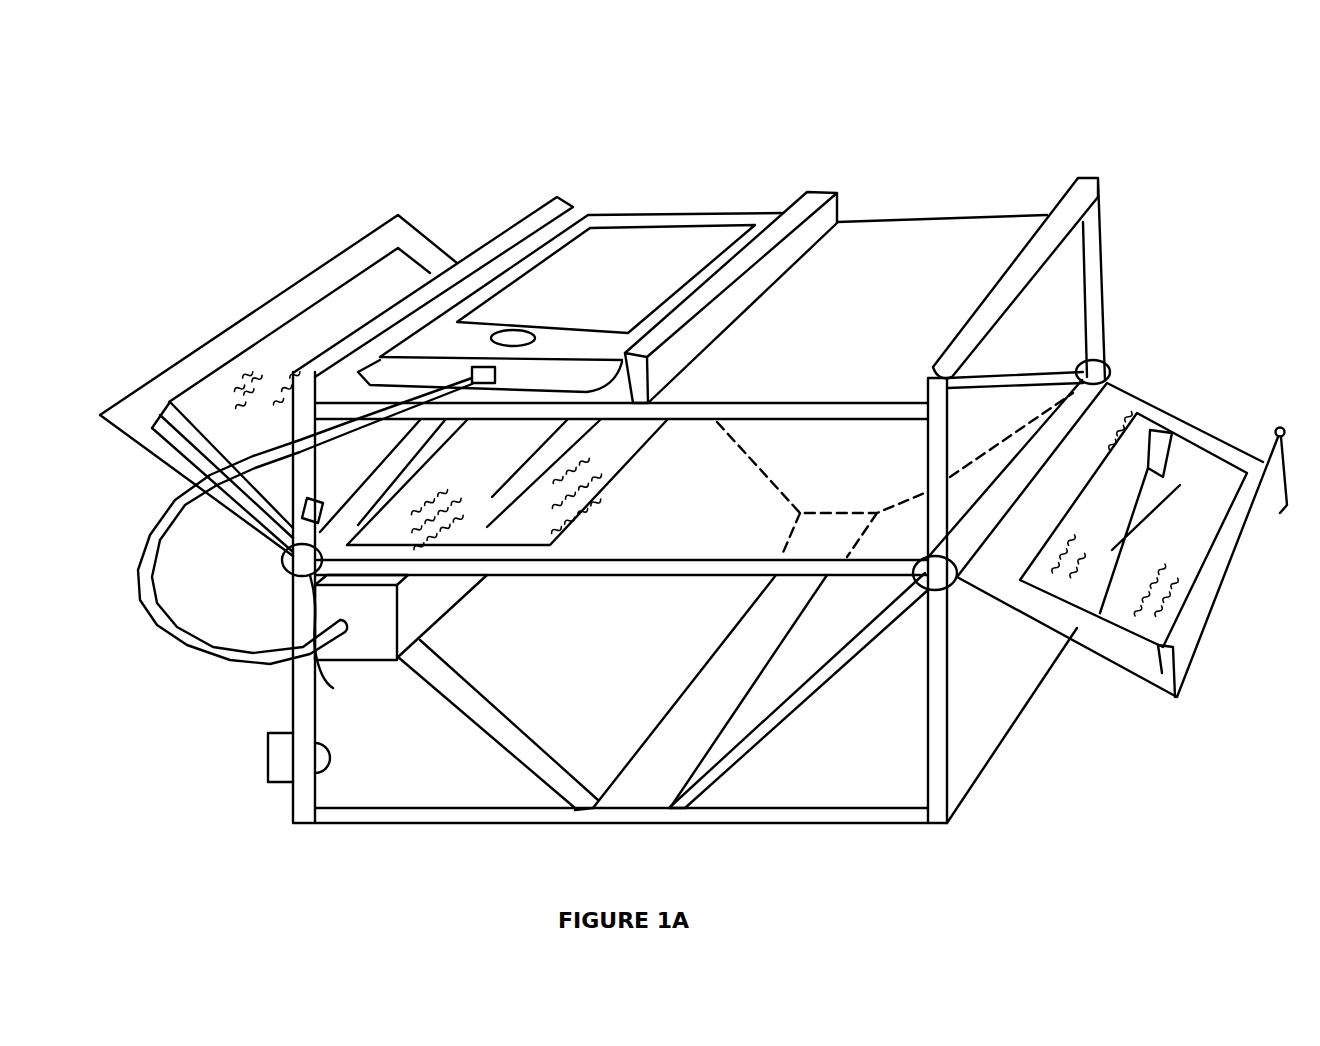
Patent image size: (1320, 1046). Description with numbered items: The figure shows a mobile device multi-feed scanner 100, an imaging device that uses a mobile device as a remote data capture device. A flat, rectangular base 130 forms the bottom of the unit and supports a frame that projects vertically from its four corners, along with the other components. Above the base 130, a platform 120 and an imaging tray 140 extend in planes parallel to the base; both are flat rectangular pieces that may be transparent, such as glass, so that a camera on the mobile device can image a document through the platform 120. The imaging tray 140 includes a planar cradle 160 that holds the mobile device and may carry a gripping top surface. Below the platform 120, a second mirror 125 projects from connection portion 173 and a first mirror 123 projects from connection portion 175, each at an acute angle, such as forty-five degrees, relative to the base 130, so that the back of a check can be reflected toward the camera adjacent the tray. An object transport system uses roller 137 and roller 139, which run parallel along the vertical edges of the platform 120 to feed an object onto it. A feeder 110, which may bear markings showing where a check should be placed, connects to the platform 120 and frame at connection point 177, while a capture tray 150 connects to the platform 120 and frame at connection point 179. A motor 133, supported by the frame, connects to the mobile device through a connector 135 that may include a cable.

The mobile device multi-feed scanner 100 is at (278, 165).
The feeder 110 is at (228, 337).
The platform 120 is at (573, 535).
The first mirror 123 is at (813, 643).
The second mirror 125 is at (603, 727).
The base 130 is at (808, 790).
The motor 133 is at (368, 648).
The connector 135 is at (173, 632).
The roller 137 is at (303, 558).
The roller 139 is at (943, 583).
The imaging tray 140 is at (930, 243).
The capture tray 150 is at (1110, 392).
The cradle 160 is at (820, 188).
The connection portion 173 is at (593, 808).
The connection portion 175 is at (683, 808).
The connection point 177 is at (345, 639).
The connection point 179 is at (962, 565).